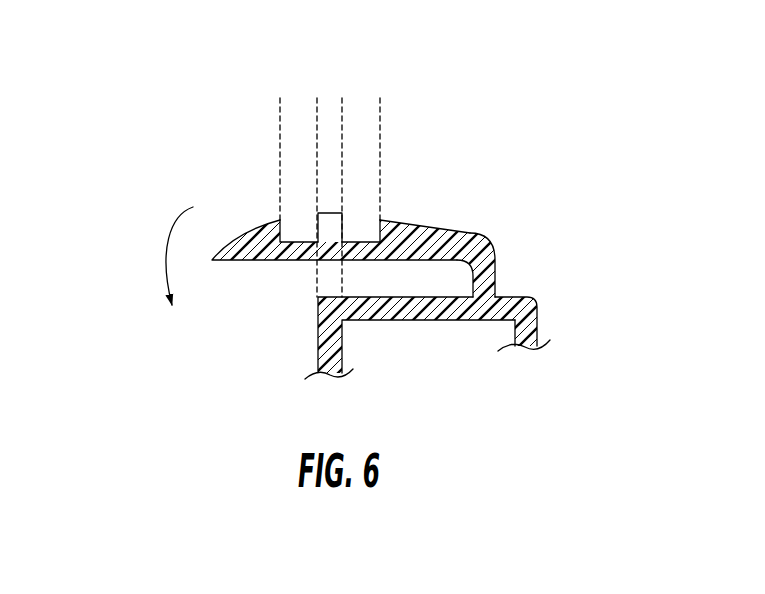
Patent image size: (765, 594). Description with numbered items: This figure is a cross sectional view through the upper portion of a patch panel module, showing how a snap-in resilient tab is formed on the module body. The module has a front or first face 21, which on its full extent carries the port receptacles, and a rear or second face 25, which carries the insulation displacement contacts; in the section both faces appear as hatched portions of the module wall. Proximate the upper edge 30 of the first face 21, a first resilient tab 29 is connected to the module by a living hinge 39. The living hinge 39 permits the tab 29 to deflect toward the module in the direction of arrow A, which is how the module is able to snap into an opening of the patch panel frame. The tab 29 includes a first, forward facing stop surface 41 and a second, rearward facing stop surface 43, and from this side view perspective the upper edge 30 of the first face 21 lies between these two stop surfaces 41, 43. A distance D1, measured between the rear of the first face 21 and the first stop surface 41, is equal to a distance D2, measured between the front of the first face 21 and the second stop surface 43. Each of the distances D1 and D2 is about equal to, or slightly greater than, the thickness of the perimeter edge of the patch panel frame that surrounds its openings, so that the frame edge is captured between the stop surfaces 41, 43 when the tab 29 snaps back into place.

The first face 21 is at (317, 353).
The second face 25 is at (540, 322).
The first resilient tab 29 is at (427, 190).
The upper edge 30 is at (318, 212).
The living hinge 39 is at (504, 259).
The first forward facing stop surface 41 is at (380, 225).
The second rearward facing stop surface 43 is at (283, 230).
The distance D1 is at (343, 107).
The distance D2 is at (281, 107).
The arrow A is at (163, 272).